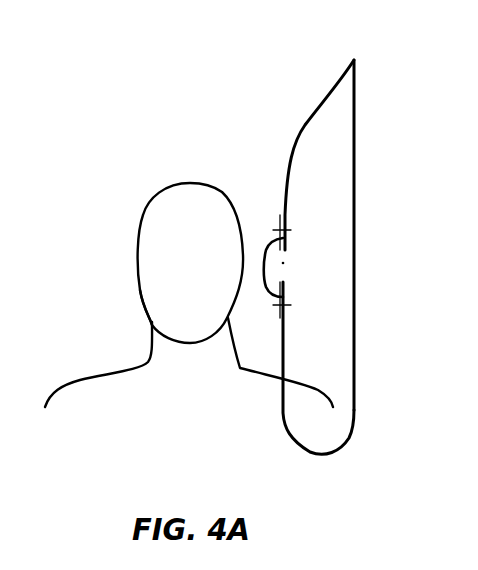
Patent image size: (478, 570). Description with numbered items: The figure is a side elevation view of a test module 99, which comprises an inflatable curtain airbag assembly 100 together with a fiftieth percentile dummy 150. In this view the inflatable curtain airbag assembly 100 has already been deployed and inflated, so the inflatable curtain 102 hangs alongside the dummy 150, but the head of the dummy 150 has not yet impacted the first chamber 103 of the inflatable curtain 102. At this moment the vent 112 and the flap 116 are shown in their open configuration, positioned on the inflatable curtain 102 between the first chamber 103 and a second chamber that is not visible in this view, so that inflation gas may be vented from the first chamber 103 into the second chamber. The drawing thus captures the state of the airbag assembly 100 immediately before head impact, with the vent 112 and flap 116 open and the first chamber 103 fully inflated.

The test module 99 is at (142, 133).
The inflatable curtain airbag assembly 100 is at (364, 240).
The inflatable curtain 102 is at (364, 96).
The first chamber 103 is at (330, 335).
The vent 112 is at (284, 263).
The flap 116 is at (265, 250).
The 50th percentile dummy 150 is at (153, 288).